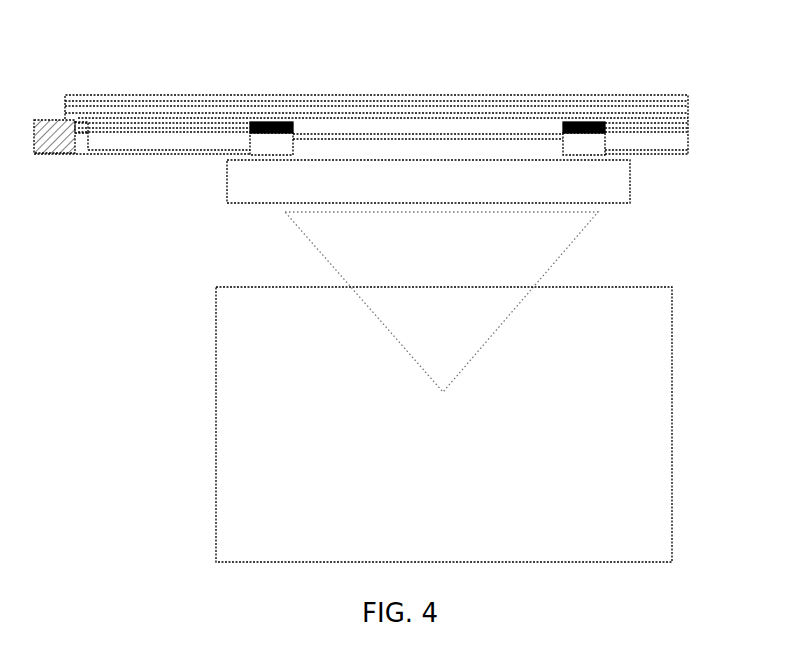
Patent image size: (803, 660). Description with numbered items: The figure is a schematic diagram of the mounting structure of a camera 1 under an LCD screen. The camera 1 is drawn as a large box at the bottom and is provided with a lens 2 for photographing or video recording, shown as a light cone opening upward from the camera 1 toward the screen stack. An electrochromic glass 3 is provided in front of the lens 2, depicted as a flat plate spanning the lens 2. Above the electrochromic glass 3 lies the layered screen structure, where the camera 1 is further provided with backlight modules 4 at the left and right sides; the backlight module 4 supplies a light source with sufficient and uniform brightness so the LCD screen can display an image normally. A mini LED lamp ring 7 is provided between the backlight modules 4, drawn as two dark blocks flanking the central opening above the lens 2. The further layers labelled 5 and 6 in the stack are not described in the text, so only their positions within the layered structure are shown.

The camera 1 is at (628, 420).
The lens 2 is at (500, 267).
The electrochromic glass 3 is at (595, 188).
The backlight module 4 is at (115, 138).
The intermediate layer 5 is at (395, 130).
The cover layer 6 is at (316, 105).
The mini LED lamp ring 7 is at (263, 120).